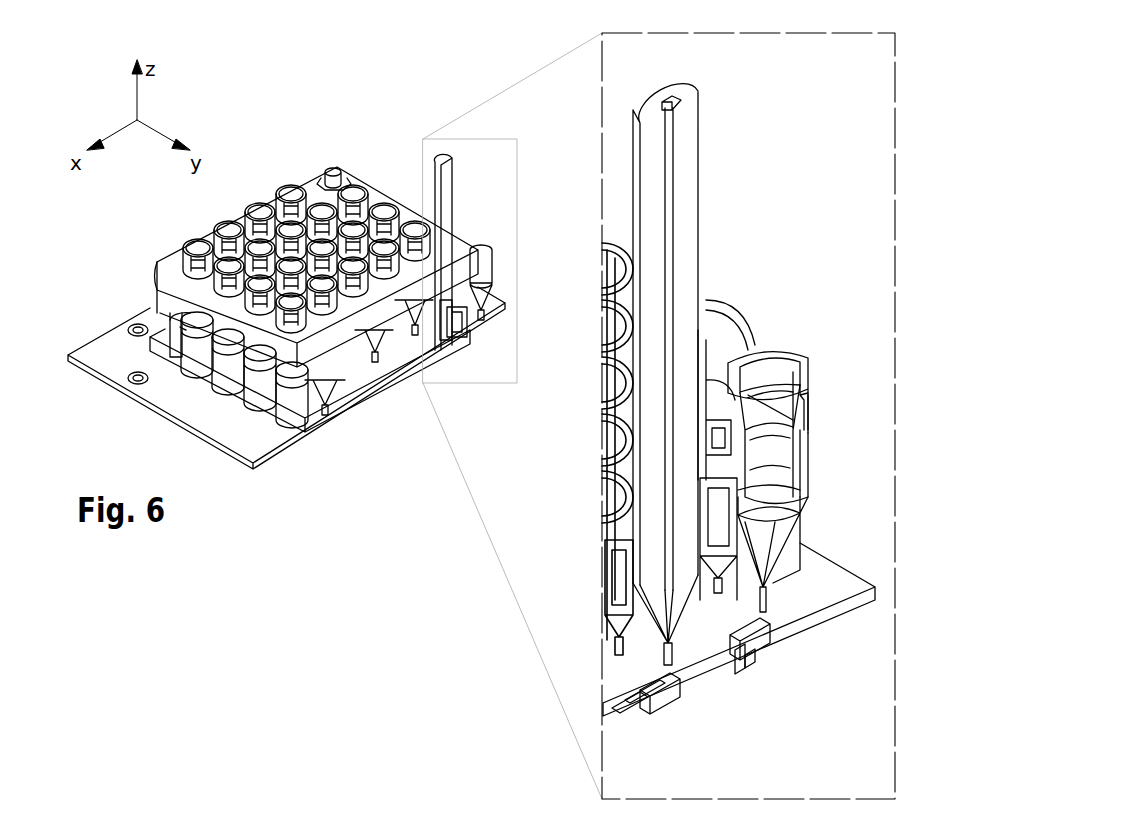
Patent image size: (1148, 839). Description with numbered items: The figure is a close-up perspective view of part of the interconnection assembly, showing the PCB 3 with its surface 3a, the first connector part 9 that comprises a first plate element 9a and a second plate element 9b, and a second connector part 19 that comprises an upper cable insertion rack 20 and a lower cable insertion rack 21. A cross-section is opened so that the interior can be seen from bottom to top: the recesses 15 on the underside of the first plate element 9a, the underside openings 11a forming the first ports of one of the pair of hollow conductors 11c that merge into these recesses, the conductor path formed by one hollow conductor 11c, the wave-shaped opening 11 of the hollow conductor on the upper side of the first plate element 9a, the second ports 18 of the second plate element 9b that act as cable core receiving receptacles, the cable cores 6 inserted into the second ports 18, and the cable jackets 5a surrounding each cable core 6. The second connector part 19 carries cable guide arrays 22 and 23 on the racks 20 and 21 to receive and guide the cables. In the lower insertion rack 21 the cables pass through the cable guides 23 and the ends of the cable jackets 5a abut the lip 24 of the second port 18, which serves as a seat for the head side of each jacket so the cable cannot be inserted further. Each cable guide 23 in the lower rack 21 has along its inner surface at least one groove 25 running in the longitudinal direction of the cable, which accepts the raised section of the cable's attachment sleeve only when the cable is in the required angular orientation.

The PCB 3 is at (286, 378).
The base plate surface 3a is at (817, 588).
The cable jacket 5a is at (687, 143).
The cable core 6 is at (673, 183).
The first connector part 9 is at (820, 535).
The first plate element 9a is at (667, 690).
The second plate element 9b is at (697, 638).
The wave-shaped opening 11 is at (740, 636).
The underside opening 11a is at (738, 652).
The hollow conductor 11c is at (745, 660).
The recess 15 is at (638, 712).
The second port 18 is at (772, 545).
The second connector part 19 is at (808, 410).
The cable insertion rack 20 is at (823, 373).
The cable insertion rack 21 is at (810, 430).
The cable guide array 22 is at (768, 366).
The cable guide 23 is at (765, 447).
The lip 24 is at (785, 513).
The groove 25 is at (738, 373).